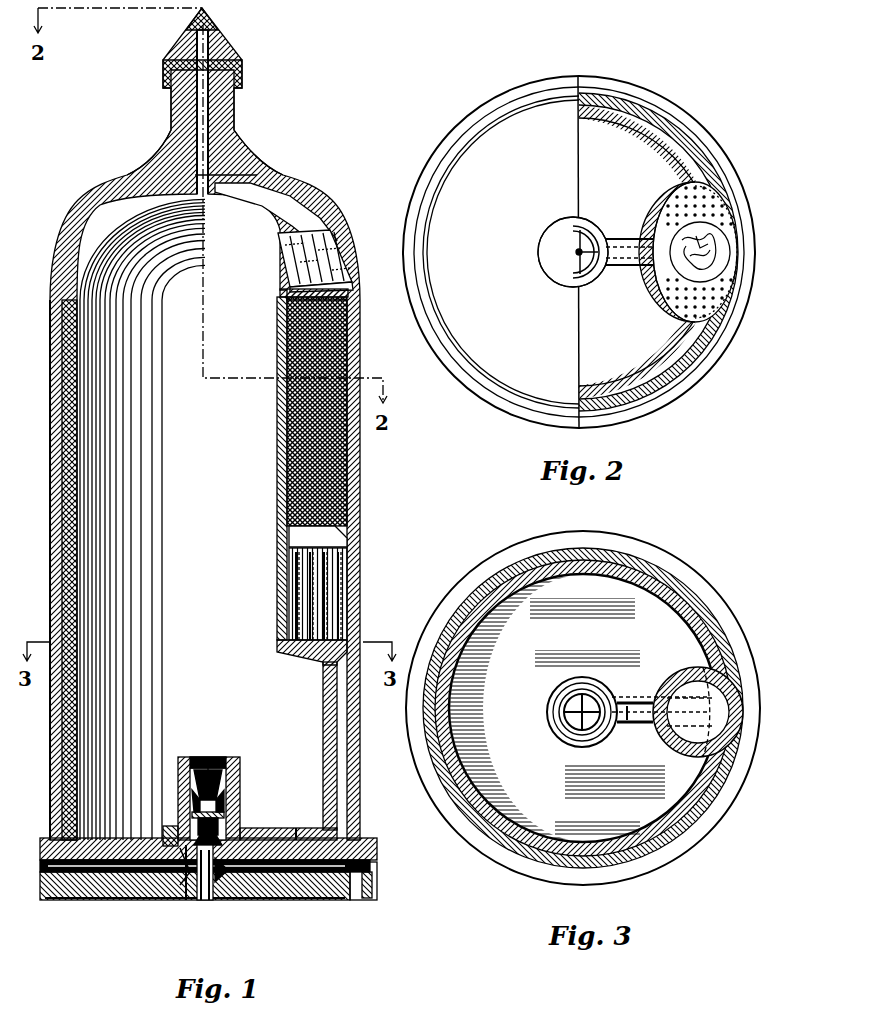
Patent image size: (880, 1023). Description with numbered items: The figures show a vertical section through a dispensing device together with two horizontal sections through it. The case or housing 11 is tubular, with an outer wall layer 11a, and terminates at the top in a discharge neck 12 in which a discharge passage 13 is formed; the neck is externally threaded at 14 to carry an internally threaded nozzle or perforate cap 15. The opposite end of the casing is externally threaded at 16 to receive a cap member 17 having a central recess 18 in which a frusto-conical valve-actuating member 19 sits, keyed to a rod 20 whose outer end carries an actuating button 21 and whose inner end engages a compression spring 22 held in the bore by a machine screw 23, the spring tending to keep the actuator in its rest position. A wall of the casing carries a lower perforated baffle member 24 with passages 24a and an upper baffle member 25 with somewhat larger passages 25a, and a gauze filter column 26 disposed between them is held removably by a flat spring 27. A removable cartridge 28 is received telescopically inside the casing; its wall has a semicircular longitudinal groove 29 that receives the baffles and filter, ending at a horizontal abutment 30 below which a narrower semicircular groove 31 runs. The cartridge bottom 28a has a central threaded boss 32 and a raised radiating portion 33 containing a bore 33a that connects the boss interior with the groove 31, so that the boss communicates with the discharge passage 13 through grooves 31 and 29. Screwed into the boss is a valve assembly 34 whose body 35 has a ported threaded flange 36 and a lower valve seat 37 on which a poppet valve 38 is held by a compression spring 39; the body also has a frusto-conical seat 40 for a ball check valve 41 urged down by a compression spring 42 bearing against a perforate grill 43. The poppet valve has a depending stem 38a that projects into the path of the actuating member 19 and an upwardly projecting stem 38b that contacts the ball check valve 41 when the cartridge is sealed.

In FIG. 1, the case or housing 11 is at (362, 500).
In FIG. 2, the case or housing 11 is at (712, 325).
In FIG. 3, the case or housing 11 is at (697, 597).
In FIG. 1, the outer wall layer 11a is at (365, 312).
In FIG. 2, the outer wall layer 11a is at (472, 376).
In FIG. 1, the discharge end portion or neck 12 is at (226, 108).
In FIG. 1, the discharge passage or port 13 is at (207, 125).
In FIG. 2, the discharge passage or port 13 is at (576, 252).
In FIG. 1, the external threads 14 is at (243, 90).
In FIG. 1, the nozzle or perforate cap or closure 15 is at (212, 22).
In FIG. 2, the nozzle or perforate cap or closure 15 is at (562, 232).
In FIG. 1, the external threads 16 is at (377, 845).
In FIG. 1, the cap member or closure 17 is at (312, 900).
In FIG. 2, the cap member or closure 17 is at (715, 368).
In FIG. 3, the cap member or closure 17 is at (672, 568).
In FIG. 1, the recess 18 is at (196, 878).
In FIG. 1, the valve-actuating member 19 is at (210, 880).
In FIG. 1, the rod or shaft 20 is at (255, 898).
In FIG. 1, the actuating finger or button 21 is at (365, 900).
In FIG. 1, the compression spring 22 is at (85, 900).
In FIG. 1, the machine screw 23 is at (48, 866).
In FIG. 1, the perforated block or baffle member 24 is at (340, 568).
In FIG. 2, the perforated block or baffle member 24 is at (722, 212).
In FIG. 1, the perforations or passages 24a is at (340, 590).
In FIG. 2, the perforations or passages 24a is at (735, 222).
In FIG. 1, the block or baffle member 25 is at (281, 262).
In FIG. 1, the passages 25a is at (282, 284).
In FIG. 1, the filter 26 is at (345, 348).
In FIG. 2, the filter 26 is at (714, 250).
In FIG. 1, the flat spring 27 is at (281, 293).
In FIG. 1, the cartridge, capsule, container or package 28 is at (189, 458).
In FIG. 2, the cartridge, capsule, container or package 28 is at (643, 341).
In FIG. 3, the cartridge, capsule, container or package 28 is at (712, 618).
In FIG. 1, the base portion or bottom 28a is at (115, 900).
In FIG. 3, the base portion or bottom 28a is at (534, 640).
In FIG. 1, the longitudinally extending groove or recess 29 is at (272, 190).
In FIG. 2, the longitudinally extending groove or recess 29 is at (705, 288).
In FIG. 3, the longitudinally extending groove or recess 29 is at (690, 663).
In FIG. 1, the horizontal wall or abutment portion 30 is at (312, 655).
In FIG. 3, the horizontal wall or abutment portion 30 is at (716, 718).
In FIG. 1, the semicircular longitudinal groove 31 is at (338, 731).
In FIG. 3, the semicircular longitudinal groove 31 is at (718, 695).
In FIG. 1, the boss 32 is at (170, 828).
In FIG. 2, the boss 32 is at (593, 283).
In FIG. 3, the boss 32 is at (560, 678).
In FIG. 1, the raised radiating portion 33 is at (274, 828).
In FIG. 2, the raised radiating portion 33 is at (628, 263).
In FIG. 3, the raised radiating portion 33 is at (635, 698).
In FIG. 1, the passageway or bore 33a is at (304, 828).
In FIG. 2, the passageway or bore 33a is at (636, 243).
In FIG. 3, the passageway or bore 33a is at (630, 722).
In FIG. 1, the valve assembly 34 is at (254, 768).
In FIG. 2, the valve assembly 34 is at (596, 232).
In FIG. 3, the valve assembly 34 is at (558, 700).
In FIG. 1, the valve body or member 35 is at (195, 790).
In FIG. 1, the ported threaded flange 36 is at (178, 872).
In FIG. 1, the valve seat 37 is at (184, 880).
In FIG. 1, the poppet-type valve 38 is at (226, 836).
In FIG. 1, the depending stem portion 38a is at (225, 882).
In FIG. 1, the upwardly projecting stem portion 38b is at (226, 806).
In FIG. 1, the compression spring 39 is at (193, 802).
In FIG. 1, the frusto-conical seat portion 40 is at (222, 790).
In FIG. 1, the check valve 41 is at (221, 770).
In FIG. 1, the compression spring 42 is at (203, 770).
In FIG. 1, the perforate grill or case member 43 is at (211, 753).
In FIG. 2, the perforate grill or case member 43 is at (581, 240).
In FIG. 3, the perforate grill or case member 43 is at (566, 712).